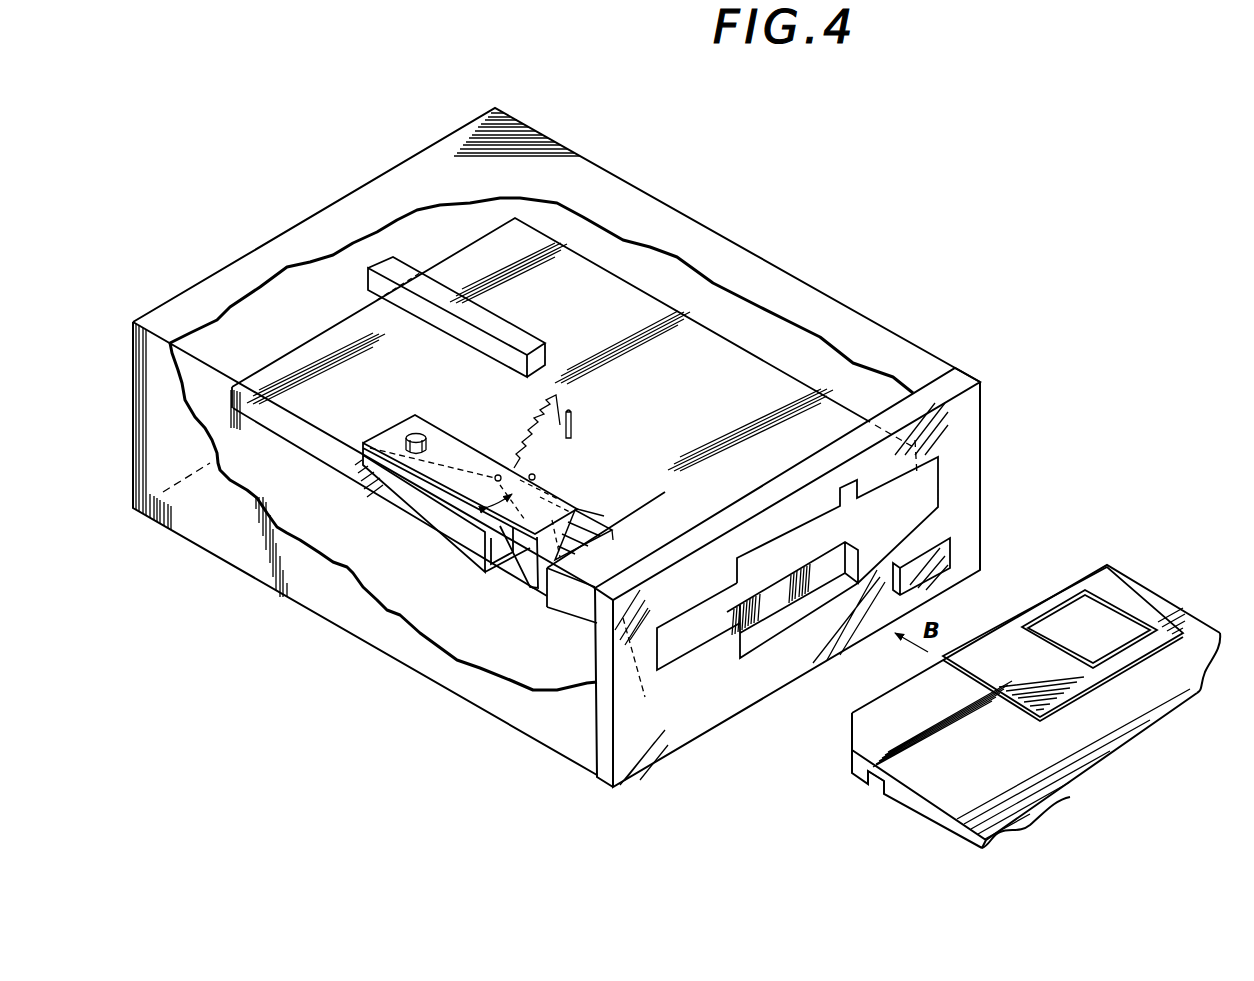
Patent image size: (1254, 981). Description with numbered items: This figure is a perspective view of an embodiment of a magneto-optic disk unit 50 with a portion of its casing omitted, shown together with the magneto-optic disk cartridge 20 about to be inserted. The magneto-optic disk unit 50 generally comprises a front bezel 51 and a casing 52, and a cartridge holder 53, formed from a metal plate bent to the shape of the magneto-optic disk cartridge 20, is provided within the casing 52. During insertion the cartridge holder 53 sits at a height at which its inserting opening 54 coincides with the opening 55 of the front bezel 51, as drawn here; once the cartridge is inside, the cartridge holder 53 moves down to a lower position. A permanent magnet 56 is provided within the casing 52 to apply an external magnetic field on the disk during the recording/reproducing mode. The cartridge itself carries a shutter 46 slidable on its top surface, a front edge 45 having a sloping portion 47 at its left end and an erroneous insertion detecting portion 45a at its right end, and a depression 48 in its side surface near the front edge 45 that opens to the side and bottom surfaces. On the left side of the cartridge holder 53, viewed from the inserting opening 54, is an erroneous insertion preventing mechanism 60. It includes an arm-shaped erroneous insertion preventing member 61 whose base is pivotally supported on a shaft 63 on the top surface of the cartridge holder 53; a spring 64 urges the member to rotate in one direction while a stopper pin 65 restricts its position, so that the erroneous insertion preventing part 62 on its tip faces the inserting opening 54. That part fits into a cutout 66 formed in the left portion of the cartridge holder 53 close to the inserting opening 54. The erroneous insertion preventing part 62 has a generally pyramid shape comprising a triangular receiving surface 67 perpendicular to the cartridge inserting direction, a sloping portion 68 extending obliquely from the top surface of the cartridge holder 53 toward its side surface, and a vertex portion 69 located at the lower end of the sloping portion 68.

The magneto-optic disk cartridge 20 is at (998, 712).
The front edge 45 is at (890, 693).
The erroneous insertion detecting portion 45a is at (1103, 563).
The shutter 46 is at (1008, 620).
The sloping portion 47 is at (852, 738).
The depression 48 is at (882, 779).
The magneto-optic disk unit 50 is at (873, 131).
The front bezel 51 is at (825, 577).
The casing 52 is at (773, 270).
The cartridge holder 53 is at (758, 357).
The inserting opening 54 is at (683, 668).
The opening 55 is at (700, 640).
The permanent magnet 56 is at (502, 325).
The erroneous insertion preventing mechanism 60 is at (530, 517).
The erroneous insertion preventing member 61 is at (483, 458).
The erroneous insertion preventing part 62 is at (515, 585).
The shaft 63 is at (412, 432).
The spring 64 is at (543, 433).
The stopper pin 65 is at (537, 477).
The cutout 66 is at (604, 516).
The triangular receiving surface 67 is at (562, 558).
The sloping portion 68 is at (613, 540).
The vertex portion 69 is at (540, 590).